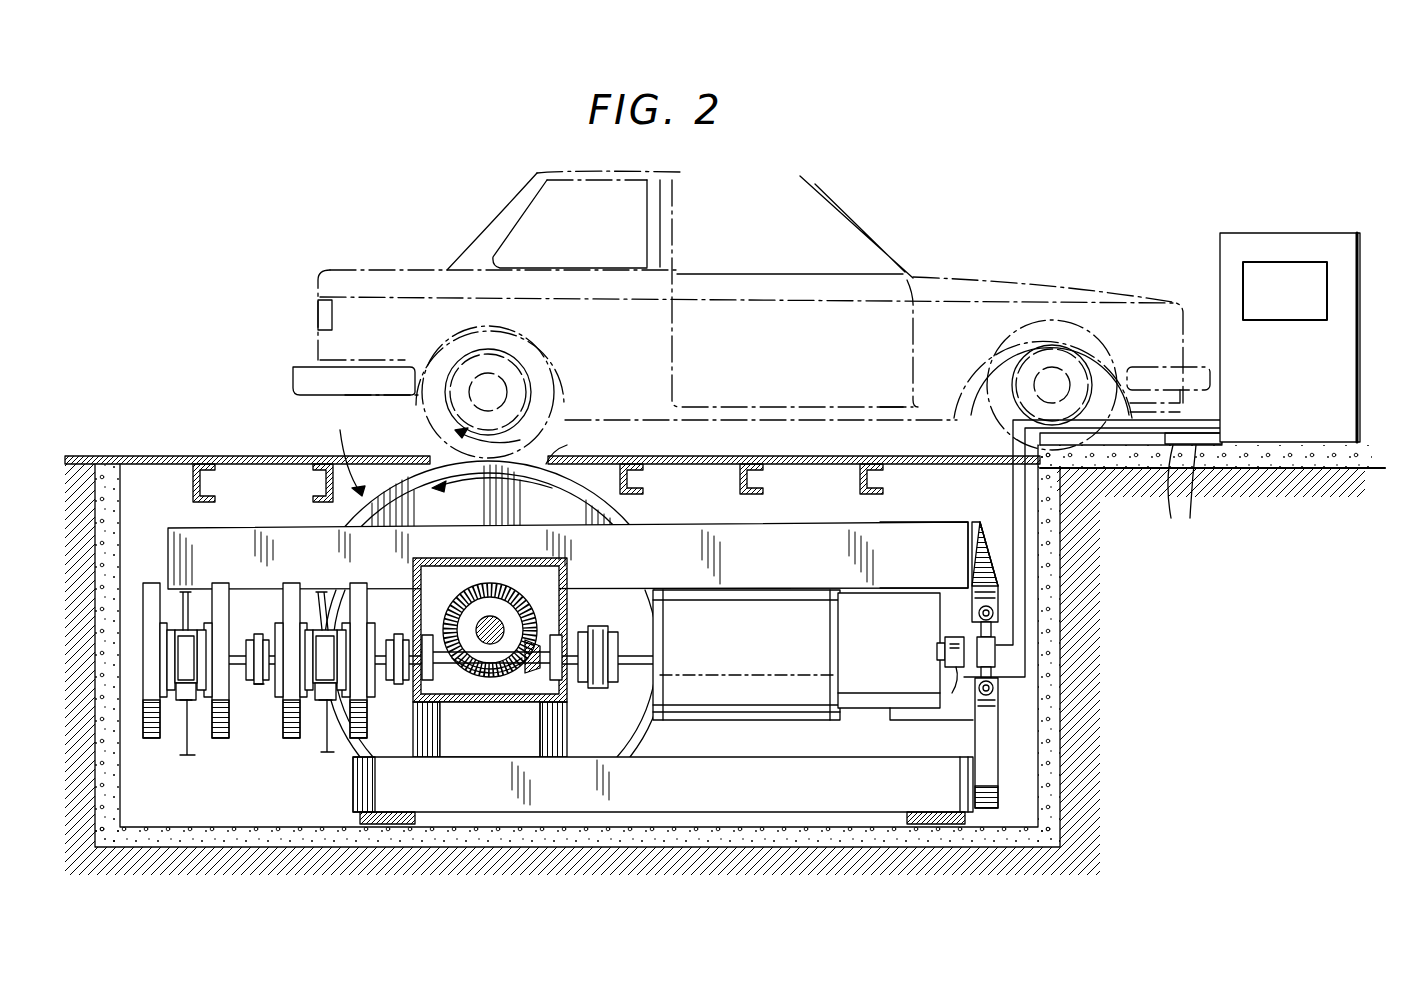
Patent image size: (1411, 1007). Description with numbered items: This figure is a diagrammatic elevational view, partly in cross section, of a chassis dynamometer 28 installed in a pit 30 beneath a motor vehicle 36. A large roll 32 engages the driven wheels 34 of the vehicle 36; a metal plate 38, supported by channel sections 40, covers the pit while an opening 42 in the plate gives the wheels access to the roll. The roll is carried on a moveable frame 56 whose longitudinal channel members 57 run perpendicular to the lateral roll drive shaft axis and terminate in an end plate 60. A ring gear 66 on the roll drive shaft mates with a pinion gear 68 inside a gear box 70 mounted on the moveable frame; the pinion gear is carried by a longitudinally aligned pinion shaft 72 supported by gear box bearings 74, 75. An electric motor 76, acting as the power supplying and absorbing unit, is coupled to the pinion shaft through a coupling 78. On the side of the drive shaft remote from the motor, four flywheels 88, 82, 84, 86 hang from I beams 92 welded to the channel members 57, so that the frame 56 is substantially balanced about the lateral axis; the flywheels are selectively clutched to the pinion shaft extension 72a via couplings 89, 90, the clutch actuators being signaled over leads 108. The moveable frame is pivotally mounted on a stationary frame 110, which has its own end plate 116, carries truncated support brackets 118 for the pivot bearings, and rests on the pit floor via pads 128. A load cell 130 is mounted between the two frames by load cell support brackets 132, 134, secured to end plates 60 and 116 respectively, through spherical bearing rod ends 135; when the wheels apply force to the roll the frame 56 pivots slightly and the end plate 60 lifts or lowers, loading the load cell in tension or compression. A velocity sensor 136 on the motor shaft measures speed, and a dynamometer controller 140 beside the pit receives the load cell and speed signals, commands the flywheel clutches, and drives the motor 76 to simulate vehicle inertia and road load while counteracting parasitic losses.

The dynamometer 28 is at (347, 451).
The pit 30 is at (286, 806).
The roll 32 is at (630, 508).
The driven wheels 34 is at (432, 426).
The motor vehicle 36 is at (751, 300).
The metal plate 38 is at (200, 454).
The channel sections 40 is at (313, 480).
The opening 42 is at (571, 444).
The moveable frame 56 is at (903, 519).
The longitudinal channel members 57 is at (934, 563).
The end plate 60 is at (978, 556).
The ring gear 66 is at (502, 604).
The pinion gear 68 is at (500, 680).
The gear box 70 is at (515, 620).
The pinion shaft 72 is at (540, 672).
The pinion shaft extension 72a is at (272, 652).
The gear box bearing 74 is at (556, 640).
The gear box bearing 75 is at (432, 636).
The electric motor 76 is at (752, 659).
The coupling 78 is at (598, 688).
The flywheel 82 is at (362, 581).
The flywheel 84 is at (291, 581).
The flywheel 86 is at (222, 581).
The flywheel 88 is at (150, 581).
The coupling 89 is at (398, 686).
The coupling 90 is at (258, 690).
The I beam 92 is at (190, 597).
The leads 108 is at (196, 740).
The stationary frame 110 is at (656, 797).
The end plate 116 is at (962, 770).
The truncated support brackets 118 is at (530, 733).
The pads 128 is at (410, 816).
The load cell 130 is at (983, 635).
The load cell support bracket 132 is at (990, 560).
The load cell support bracket 134 is at (1061, 696).
The spherical bearing rod ends 135 is at (994, 613).
The velocity sensor 136 is at (956, 679).
The dynamometer controller 140 is at (1300, 381).